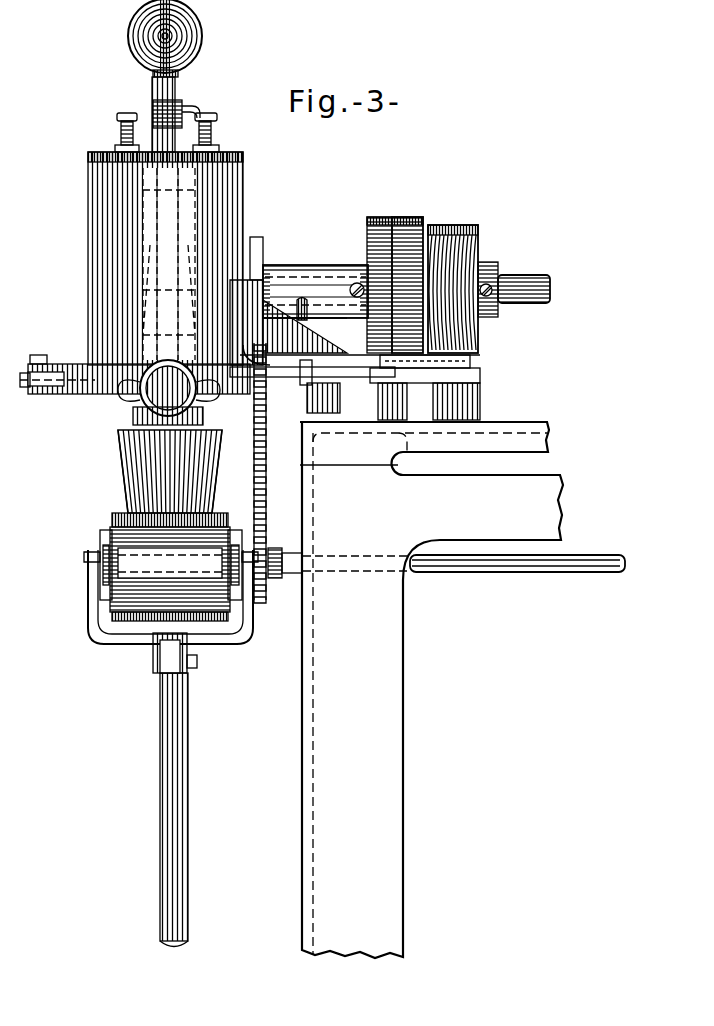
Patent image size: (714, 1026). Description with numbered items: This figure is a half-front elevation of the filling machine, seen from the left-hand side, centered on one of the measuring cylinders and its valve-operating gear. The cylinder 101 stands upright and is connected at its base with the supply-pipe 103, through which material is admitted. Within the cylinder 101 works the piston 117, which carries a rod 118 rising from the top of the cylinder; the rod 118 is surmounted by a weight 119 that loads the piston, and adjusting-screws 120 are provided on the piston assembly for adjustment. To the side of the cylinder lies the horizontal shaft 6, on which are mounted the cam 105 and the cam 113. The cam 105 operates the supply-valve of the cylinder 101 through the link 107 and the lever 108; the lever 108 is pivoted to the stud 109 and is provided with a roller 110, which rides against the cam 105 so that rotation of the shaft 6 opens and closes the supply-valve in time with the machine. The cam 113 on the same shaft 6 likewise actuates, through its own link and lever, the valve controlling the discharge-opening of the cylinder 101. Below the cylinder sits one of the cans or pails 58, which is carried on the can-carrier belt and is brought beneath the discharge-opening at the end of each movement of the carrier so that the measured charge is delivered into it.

The weight 119 is at (187, 48).
The rod 118 is at (152, 89).
The adjusting-screws 120 is at (118, 127).
The cylinder 101 is at (247, 179).
The piston 117 is at (110, 313).
The supply-pipe 103 is at (135, 418).
The cans or pails 58 is at (122, 476).
The cam 105 is at (413, 216).
The cam 113 is at (470, 226).
The shaft 6 is at (526, 279).
The roller 110 is at (470, 359).
The stud 109 is at (479, 374).
The link 107 is at (430, 395).
The lever 108 is at (290, 410).